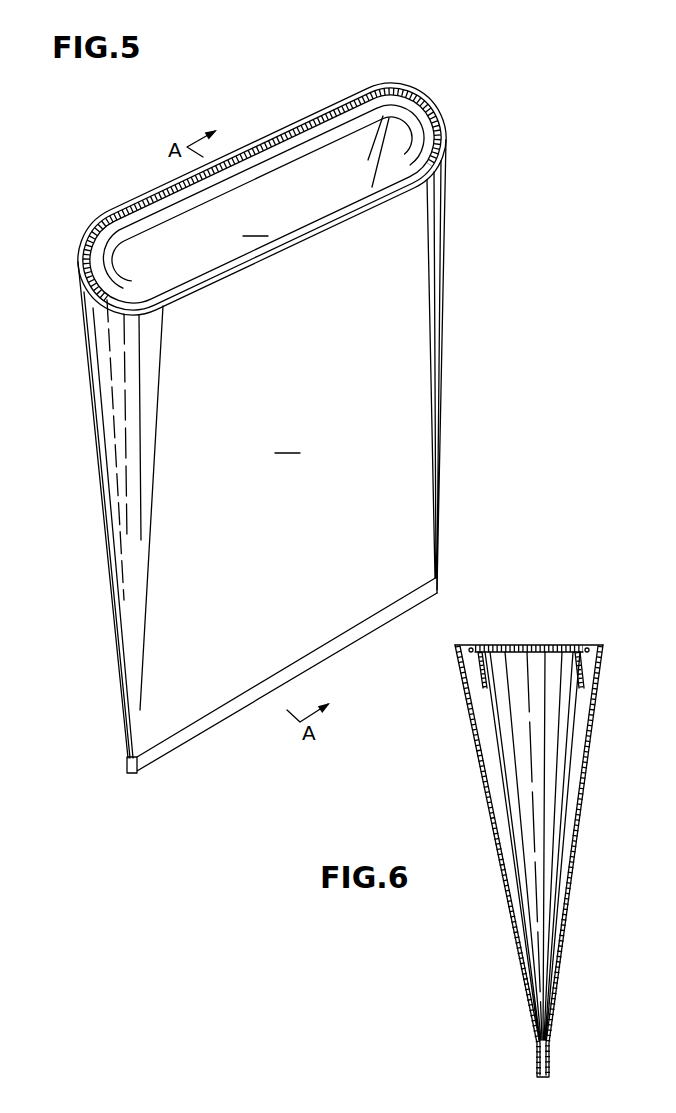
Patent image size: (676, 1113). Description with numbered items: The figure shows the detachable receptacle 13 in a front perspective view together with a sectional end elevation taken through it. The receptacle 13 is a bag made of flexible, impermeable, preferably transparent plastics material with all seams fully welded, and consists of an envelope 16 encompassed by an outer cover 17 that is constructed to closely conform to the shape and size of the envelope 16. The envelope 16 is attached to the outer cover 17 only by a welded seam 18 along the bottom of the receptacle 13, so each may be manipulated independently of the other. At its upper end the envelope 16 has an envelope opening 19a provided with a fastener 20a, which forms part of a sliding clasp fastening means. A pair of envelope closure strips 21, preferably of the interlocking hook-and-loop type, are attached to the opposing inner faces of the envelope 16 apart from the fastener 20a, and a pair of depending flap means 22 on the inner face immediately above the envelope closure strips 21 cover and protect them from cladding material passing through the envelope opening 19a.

In FIG. 5, the receptacle 13 is at (90, 514).
In FIG. 5, the envelope 16 is at (418, 102).
In FIG. 5, the outer cover 17 is at (447, 128).
In FIG. 5, the welded seam 18 is at (178, 742).
In FIG. 5, the envelope opening 19a is at (337, 168).
In FIG. 6, the envelope opening 19a is at (540, 666).
In FIG. 5, the fastener 20a is at (275, 106).
In FIG. 6, the fastener 20a is at (488, 644).
In FIG. 6, the envelope closure strips 21 is at (478, 673).
In FIG. 6, the depending flap means 22 is at (573, 687).